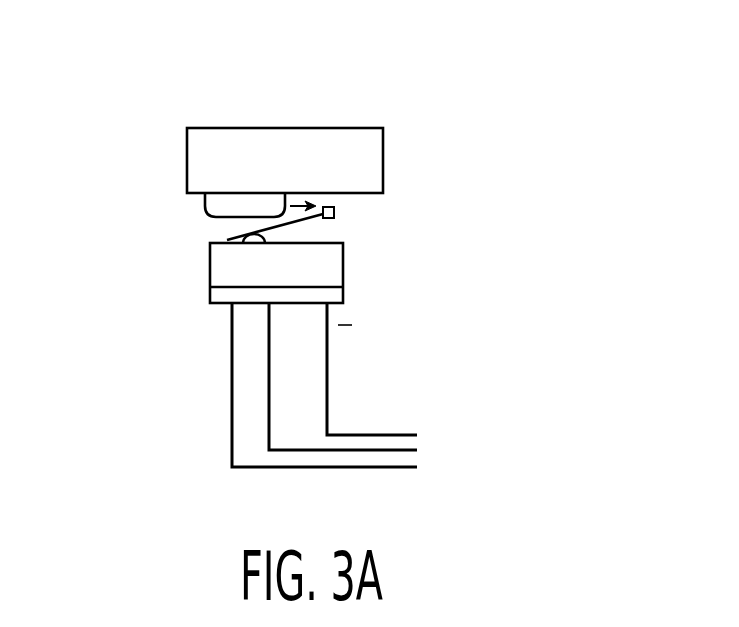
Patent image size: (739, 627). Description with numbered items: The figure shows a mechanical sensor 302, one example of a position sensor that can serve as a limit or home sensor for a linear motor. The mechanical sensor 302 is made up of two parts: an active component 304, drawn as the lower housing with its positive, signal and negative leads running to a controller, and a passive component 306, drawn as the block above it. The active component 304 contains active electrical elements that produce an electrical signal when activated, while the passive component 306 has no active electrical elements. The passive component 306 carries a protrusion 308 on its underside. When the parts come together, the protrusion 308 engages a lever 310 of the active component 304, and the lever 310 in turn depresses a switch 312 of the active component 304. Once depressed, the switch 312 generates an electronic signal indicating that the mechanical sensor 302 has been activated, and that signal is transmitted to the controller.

The mechanical sensor 302 is at (428, 98).
The active component 304 is at (210, 278).
The passive component 306 is at (376, 160).
The protrusion 308 is at (205, 204).
The lever 310 is at (240, 242).
The switch 312 is at (265, 238).